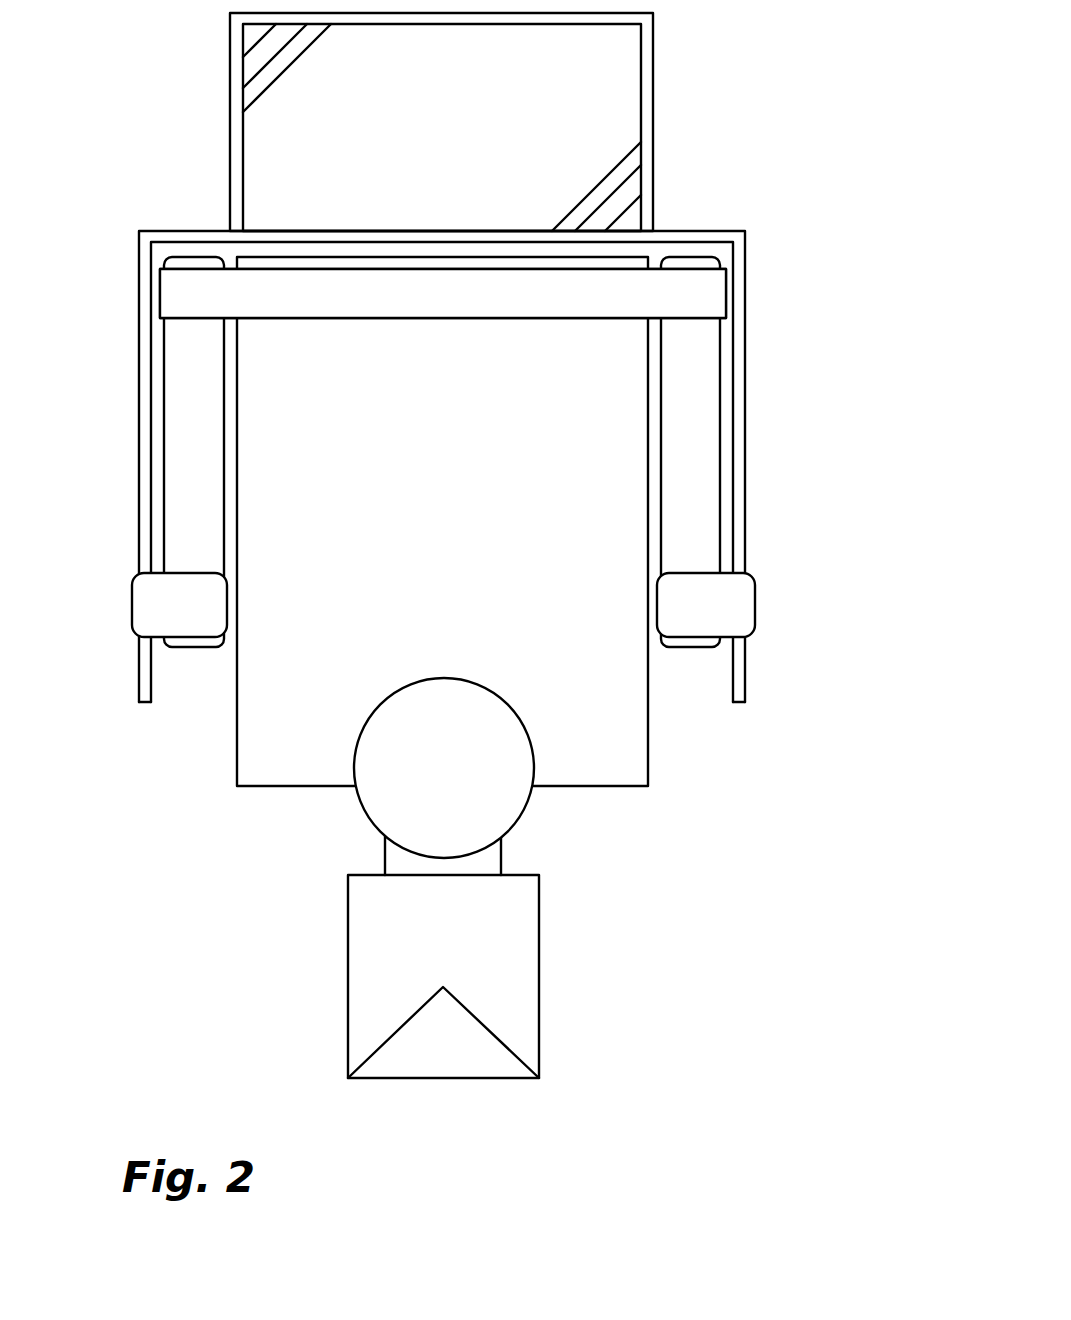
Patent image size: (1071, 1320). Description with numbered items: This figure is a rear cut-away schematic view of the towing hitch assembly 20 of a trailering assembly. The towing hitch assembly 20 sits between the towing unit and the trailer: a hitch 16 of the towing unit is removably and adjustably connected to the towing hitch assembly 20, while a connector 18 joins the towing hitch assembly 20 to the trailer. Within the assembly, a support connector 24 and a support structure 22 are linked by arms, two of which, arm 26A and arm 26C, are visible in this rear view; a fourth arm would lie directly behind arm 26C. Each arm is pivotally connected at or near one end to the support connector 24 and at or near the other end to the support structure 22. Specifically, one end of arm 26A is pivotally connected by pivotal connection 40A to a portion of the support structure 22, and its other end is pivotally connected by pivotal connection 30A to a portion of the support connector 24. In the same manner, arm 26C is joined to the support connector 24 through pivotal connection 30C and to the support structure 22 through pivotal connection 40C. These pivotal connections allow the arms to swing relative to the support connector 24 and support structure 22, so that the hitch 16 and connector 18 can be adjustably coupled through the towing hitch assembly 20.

The hitch 16 is at (477, 805).
The connector 18 is at (560, 118).
The towing hitch assembly 20 is at (703, 213).
The support structure 22 is at (138, 368).
The support connector 24 is at (530, 608).
The arm 26A is at (683, 488).
The arm 26C is at (212, 473).
The pivotal connection 30A is at (713, 292).
The pivotal connection 30C is at (185, 290).
The pivotal connection 40A is at (730, 613).
The pivotal connection 40C is at (167, 603).